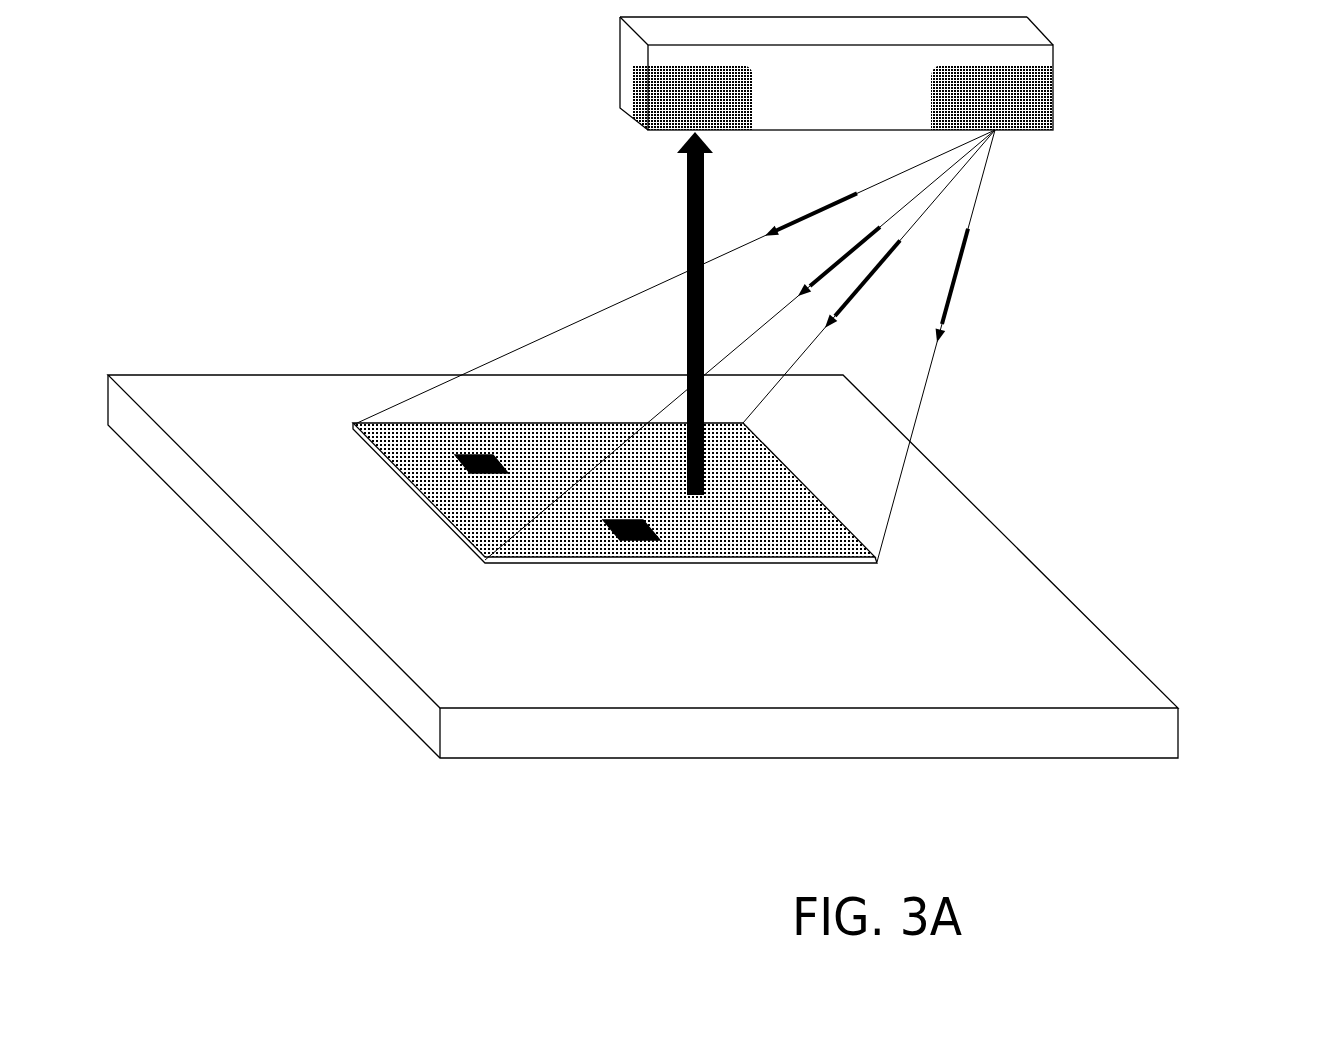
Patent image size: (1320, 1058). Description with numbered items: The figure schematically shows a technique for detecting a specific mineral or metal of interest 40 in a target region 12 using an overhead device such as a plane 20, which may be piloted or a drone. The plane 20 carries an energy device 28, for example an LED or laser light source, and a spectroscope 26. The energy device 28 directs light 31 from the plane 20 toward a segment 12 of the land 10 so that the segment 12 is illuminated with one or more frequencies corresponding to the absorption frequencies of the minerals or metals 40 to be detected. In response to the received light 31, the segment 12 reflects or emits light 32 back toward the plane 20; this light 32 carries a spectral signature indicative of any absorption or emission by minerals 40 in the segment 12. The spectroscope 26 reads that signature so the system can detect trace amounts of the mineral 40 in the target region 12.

The land 10 is at (1116, 677).
The target region 12 is at (847, 514).
The plane 20 is at (840, 103).
The spectroscope 26 is at (664, 105).
The energy device 28 is at (1046, 102).
The light 31 is at (994, 158).
The light 32 is at (682, 200).
The mineral or metal of interest 40 is at (457, 474).